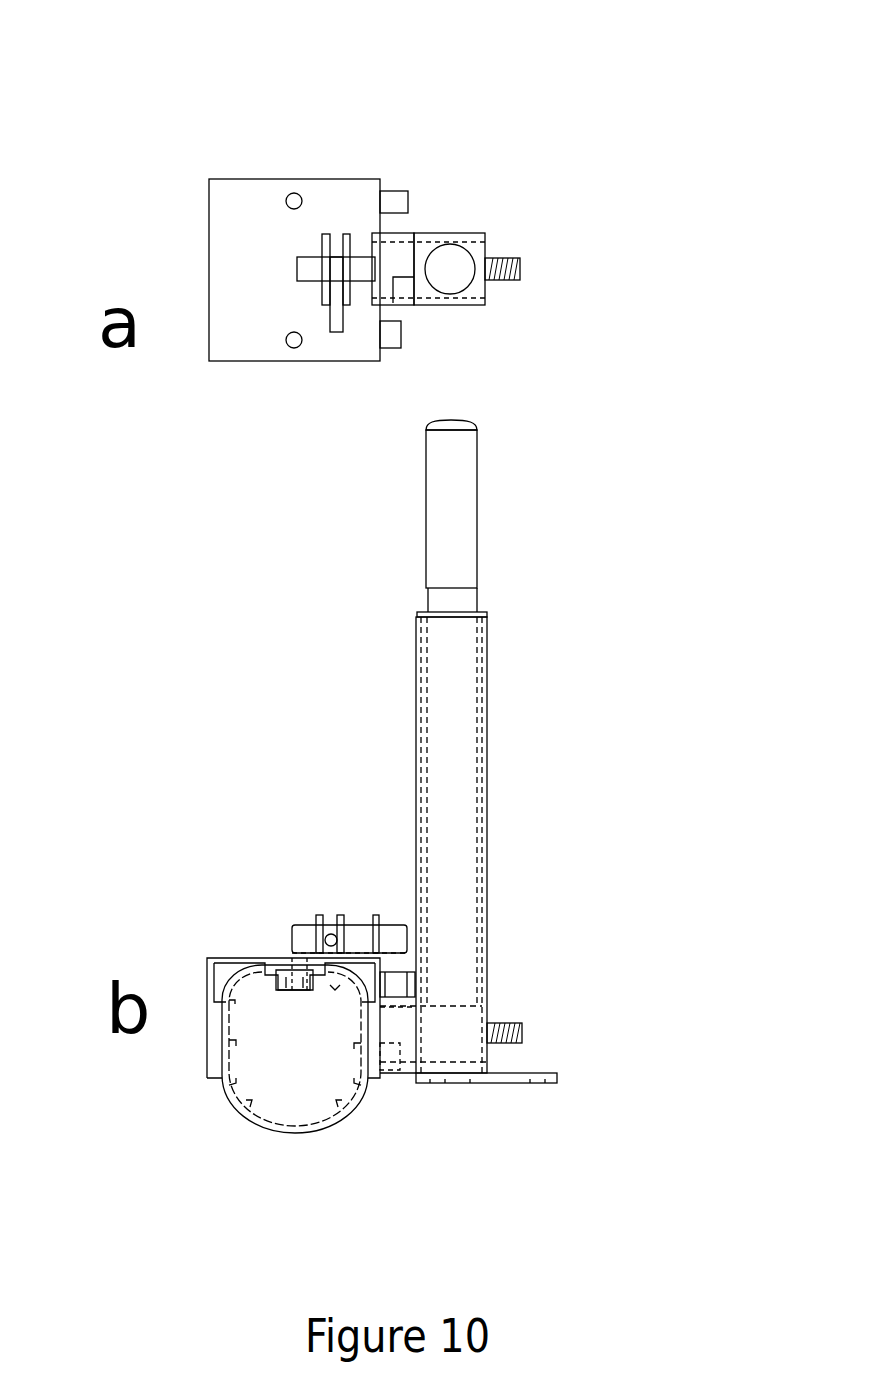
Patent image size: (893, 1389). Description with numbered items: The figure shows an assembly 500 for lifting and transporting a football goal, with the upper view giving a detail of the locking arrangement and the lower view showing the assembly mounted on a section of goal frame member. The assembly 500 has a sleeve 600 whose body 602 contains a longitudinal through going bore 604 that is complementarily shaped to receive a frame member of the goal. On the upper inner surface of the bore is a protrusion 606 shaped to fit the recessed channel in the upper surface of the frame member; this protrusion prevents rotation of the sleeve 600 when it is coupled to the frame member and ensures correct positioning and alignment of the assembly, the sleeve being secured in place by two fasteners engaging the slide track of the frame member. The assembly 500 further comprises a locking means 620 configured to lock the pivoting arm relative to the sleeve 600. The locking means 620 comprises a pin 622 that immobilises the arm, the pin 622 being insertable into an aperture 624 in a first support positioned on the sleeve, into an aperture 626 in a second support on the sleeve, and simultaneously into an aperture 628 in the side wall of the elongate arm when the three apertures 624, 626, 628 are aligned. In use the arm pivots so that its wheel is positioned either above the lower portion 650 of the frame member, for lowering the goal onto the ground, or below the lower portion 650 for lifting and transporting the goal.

In FIG. 10b, the assembly 500 is at (278, 733).
In FIG. 10b, the sleeve 600 is at (365, 1002).
In FIG. 10b, the body 602 is at (207, 1025).
In FIG. 10b, the longitudinal through going bore 604 is at (264, 1008).
In FIG. 10b, the protrusion 606 is at (315, 967).
In FIG. 10b, the locking means 620 is at (303, 925).
In FIG. 10a, the pin 622 is at (310, 268).
In FIG. 10b, the pin 622 is at (286, 982).
In FIG. 10a, the aperture 624 is at (328, 270).
In FIG. 10b, the aperture 624 is at (303, 990).
In FIG. 10a, the aperture 626 is at (372, 270).
In FIG. 10a, the aperture 628 is at (395, 258).
In FIG. 10b, the aperture 628 is at (417, 930).
In FIG. 10b, the lower portion 650 is at (258, 1125).